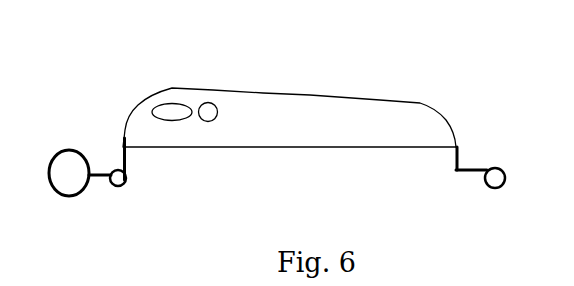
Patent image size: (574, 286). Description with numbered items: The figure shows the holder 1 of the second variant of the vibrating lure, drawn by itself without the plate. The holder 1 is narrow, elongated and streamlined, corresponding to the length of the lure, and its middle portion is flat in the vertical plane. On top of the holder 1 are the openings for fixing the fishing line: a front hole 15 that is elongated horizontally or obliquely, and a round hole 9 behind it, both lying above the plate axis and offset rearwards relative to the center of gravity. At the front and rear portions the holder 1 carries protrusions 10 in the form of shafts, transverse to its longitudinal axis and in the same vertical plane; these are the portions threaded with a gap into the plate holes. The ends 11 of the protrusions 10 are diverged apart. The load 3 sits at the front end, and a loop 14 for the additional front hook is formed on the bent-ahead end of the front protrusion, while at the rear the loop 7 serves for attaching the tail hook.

The holder 1 is at (280, 111).
The load 3 is at (68, 170).
The loop for the hook attachment 7 is at (507, 168).
The hole for the fishing line 9 is at (212, 103).
The protrusions 10 is at (126, 158).
The ends of protrusions 11 is at (99, 177).
The loop for the front hook 14 is at (173, 208).
The elongated front hole 15 is at (165, 107).